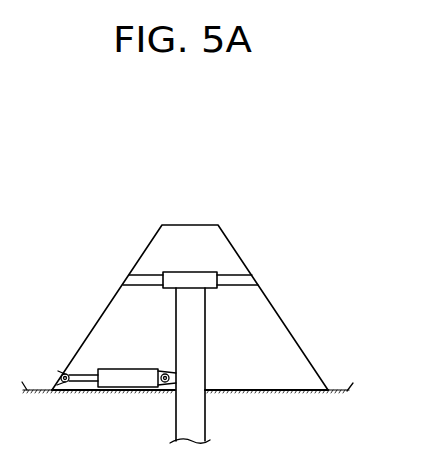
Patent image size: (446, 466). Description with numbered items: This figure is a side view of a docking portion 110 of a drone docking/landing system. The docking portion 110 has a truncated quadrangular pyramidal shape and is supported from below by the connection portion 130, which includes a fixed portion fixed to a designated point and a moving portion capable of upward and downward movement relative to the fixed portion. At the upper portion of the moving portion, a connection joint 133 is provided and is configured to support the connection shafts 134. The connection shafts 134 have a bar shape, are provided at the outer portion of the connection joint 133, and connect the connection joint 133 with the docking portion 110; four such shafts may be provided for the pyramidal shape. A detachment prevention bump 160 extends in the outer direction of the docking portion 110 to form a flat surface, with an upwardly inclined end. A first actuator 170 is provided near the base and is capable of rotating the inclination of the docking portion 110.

The docking portion 110 is at (289, 322).
The connection portion 130 is at (208, 423).
The connection joint 133 is at (190, 277).
The connection shaft 134 is at (143, 280).
The detachment prevention bump 160 is at (353, 384).
The first actuator 170 is at (127, 383).